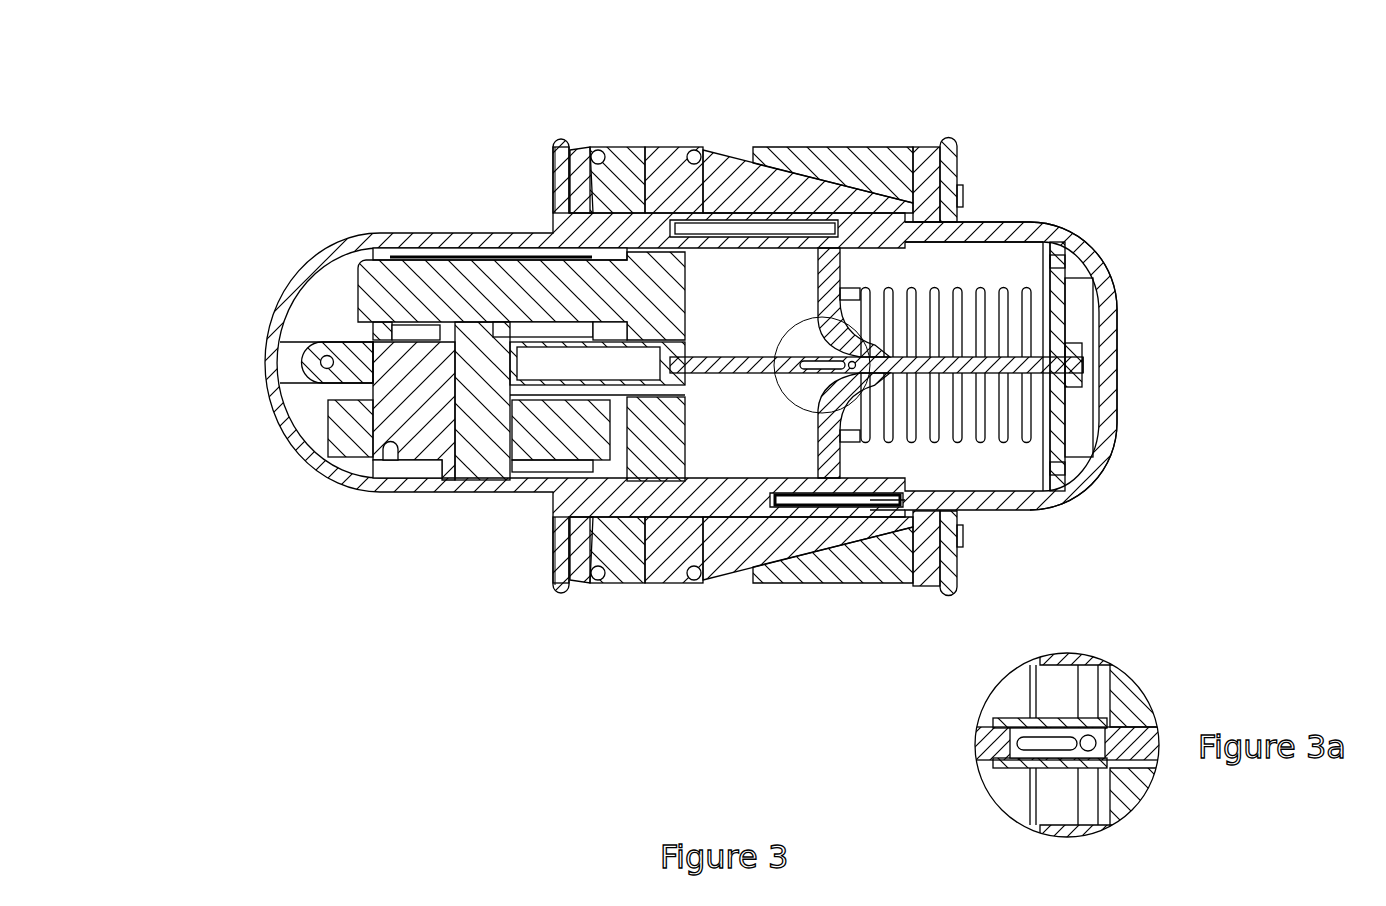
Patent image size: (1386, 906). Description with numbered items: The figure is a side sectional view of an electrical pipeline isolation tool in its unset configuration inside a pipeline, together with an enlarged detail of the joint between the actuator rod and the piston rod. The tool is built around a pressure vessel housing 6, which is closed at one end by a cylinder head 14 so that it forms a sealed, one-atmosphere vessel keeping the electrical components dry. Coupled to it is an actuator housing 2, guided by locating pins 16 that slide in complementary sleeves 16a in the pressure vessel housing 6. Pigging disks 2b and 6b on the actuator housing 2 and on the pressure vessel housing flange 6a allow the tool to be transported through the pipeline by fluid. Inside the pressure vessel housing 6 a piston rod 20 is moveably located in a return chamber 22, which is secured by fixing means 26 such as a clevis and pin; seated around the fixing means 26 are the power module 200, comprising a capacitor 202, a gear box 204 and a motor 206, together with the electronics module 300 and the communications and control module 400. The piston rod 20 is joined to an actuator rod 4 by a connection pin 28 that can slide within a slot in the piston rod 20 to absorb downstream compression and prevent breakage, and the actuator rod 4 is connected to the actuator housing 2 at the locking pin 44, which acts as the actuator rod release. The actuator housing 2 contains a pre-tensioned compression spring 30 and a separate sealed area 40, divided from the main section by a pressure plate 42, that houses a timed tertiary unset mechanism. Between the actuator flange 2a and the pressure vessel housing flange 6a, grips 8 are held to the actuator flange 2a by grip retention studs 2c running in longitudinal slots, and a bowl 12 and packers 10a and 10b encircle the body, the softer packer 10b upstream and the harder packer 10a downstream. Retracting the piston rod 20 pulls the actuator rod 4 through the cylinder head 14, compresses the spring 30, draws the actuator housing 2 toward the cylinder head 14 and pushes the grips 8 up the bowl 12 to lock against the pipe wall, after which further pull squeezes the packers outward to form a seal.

In FIG. 3, the actuator housing 2 is at (1043, 242).
In FIG. 3, the actuator flange 2a is at (925, 152).
In FIG. 3, the pigging disk 2b is at (963, 192).
In FIG. 3, the grip retention studs 2c is at (1010, 223).
In FIG. 3, the actuator rod 4 is at (1000, 373).
In FIG. 3, the pressure vessel housing 6 is at (303, 271).
In FIG. 3, the pressure vessel housing flange 6a is at (575, 140).
In FIG. 3, the pigging disk 6b is at (553, 178).
In FIG. 3, the grips 8 is at (752, 230).
In FIG. 3, the high pressure packer 10a is at (612, 150).
In FIG. 3, the low pressure packer 10b is at (672, 150).
In FIG. 3, the bowl 12 is at (733, 150).
In FIG. 3, the cylinder head 14 is at (880, 508).
In FIG. 3, the locating pins 16 is at (838, 245).
In FIG. 3, the sleeve 16a is at (798, 232).
In FIG. 3, the piston rod 20 is at (757, 376).
In FIG. 3, the return chamber 22 is at (547, 365).
In FIG. 3, the fixing means 26 is at (321, 362).
In FIG. 3, the connection pin 28 is at (822, 365).
In FIG. 3A, the connection pin 28 is at (1137, 700).
In FIG. 3, the spring 30 is at (1092, 298).
In FIG. 3, the sealed area 40 is at (1076, 300).
In FIG. 3, the pressure plate 42 is at (1067, 335).
In FIG. 3, the locking pin 44 is at (1083, 353).
In FIG. 3, the power module 200 is at (355, 420).
In FIG. 3, the capacitor 202 is at (328, 455).
In FIG. 3, the gear box 204 is at (445, 442).
In FIG. 3, the motor 206 is at (528, 452).
In FIG. 3, the electronics module 300 is at (521, 258).
In FIG. 3, the communications and control module 400 is at (647, 485).